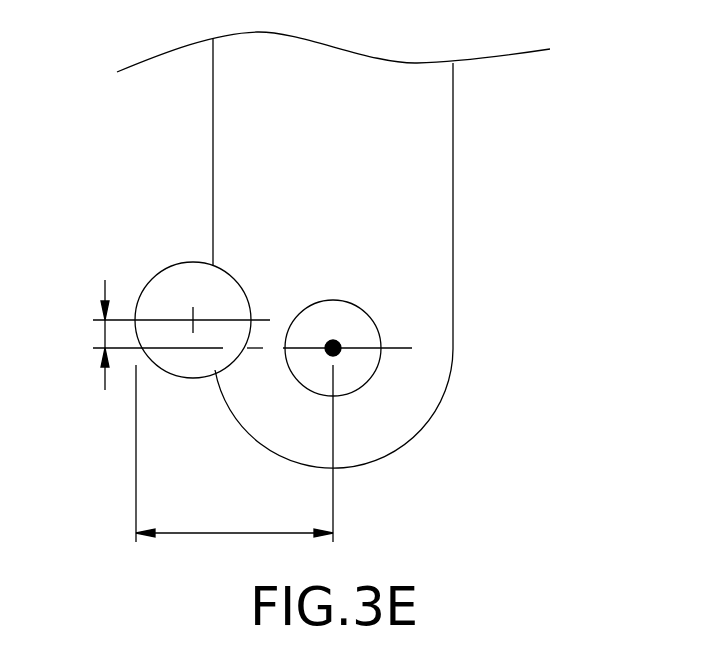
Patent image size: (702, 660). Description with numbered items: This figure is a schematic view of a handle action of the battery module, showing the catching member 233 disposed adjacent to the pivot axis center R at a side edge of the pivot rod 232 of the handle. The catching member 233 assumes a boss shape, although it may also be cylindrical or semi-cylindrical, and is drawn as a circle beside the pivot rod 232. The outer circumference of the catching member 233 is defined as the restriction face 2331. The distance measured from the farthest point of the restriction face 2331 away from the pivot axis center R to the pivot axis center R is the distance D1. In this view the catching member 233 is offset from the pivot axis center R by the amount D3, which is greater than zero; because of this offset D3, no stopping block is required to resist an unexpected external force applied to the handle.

The pivot rod 232 is at (410, 227).
The restriction face 2331 is at (195, 262).
The catching member 233 is at (192, 370).
The pivot axis center R is at (333, 348).
The distance D1 is at (234, 453).
The offset amount D3 is at (83, 335).